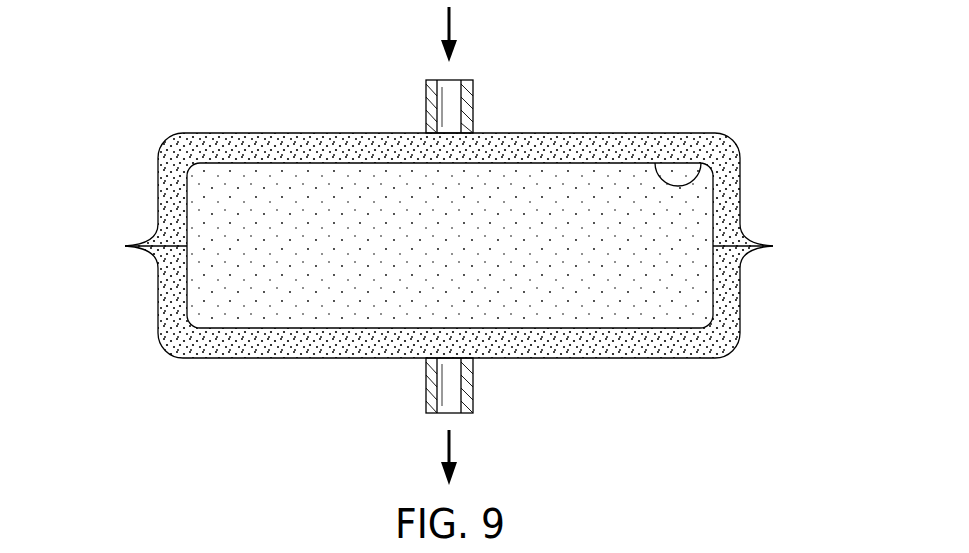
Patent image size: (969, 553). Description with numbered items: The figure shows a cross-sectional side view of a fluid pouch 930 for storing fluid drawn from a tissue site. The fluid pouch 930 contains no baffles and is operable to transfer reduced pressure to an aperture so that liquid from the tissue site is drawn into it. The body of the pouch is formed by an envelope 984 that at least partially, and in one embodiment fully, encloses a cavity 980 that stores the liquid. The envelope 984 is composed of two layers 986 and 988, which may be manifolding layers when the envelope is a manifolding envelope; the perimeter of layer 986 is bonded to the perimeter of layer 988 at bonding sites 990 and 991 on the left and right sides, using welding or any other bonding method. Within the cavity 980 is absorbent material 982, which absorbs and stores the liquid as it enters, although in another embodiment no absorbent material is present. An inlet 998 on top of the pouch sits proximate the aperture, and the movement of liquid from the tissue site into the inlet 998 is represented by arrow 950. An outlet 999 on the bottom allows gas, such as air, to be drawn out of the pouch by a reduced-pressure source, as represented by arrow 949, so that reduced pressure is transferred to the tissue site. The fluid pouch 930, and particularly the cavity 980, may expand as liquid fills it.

The fluid pouch 930 is at (152, 74).
The cavity 980 is at (708, 140).
The absorbent material 982 is at (303, 186).
The envelope 984 is at (620, 148).
The layer 986 is at (168, 199).
The layer 988 is at (168, 302).
The bonding site 990 is at (128, 246).
The bonding site 991 is at (738, 250).
The inlet 998 is at (473, 118).
The outlet 999 is at (475, 380).
The arrow 950 is at (446, 24).
The arrow 949 is at (445, 445).